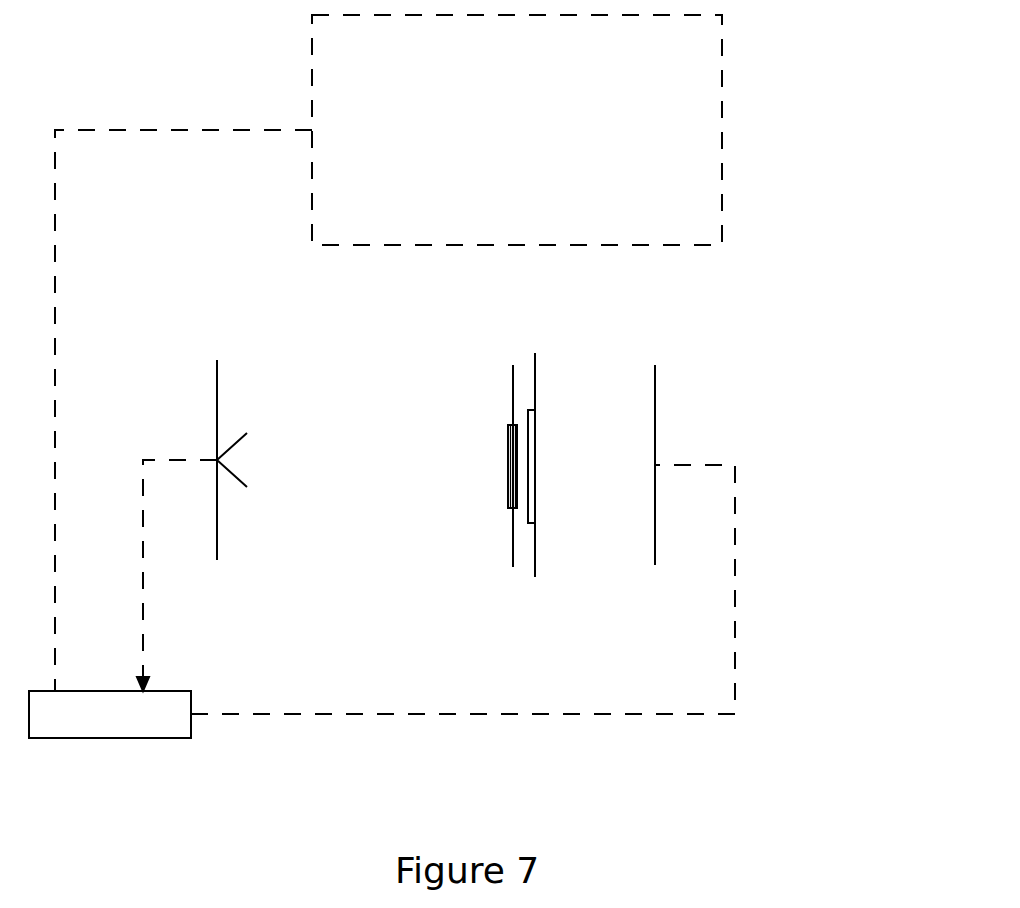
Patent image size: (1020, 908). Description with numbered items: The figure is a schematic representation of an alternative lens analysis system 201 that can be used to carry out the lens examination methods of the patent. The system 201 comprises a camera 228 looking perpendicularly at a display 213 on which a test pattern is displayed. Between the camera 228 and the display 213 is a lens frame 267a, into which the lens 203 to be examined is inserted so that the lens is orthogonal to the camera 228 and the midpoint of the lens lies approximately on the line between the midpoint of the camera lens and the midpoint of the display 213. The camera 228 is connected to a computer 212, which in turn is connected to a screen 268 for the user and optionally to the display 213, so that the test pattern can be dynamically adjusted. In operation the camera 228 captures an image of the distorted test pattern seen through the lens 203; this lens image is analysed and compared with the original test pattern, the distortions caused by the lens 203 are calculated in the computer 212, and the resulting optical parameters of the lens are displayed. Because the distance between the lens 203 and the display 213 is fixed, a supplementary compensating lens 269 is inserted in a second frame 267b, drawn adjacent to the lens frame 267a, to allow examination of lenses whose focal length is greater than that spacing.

The lens analysis system 201 is at (797, 258).
The screen 268 is at (541, 146).
The computer 212 is at (108, 727).
The camera 228 is at (217, 370).
The lens 203 is at (508, 452).
The lens frame 267a is at (512, 528).
The second frame 267b is at (535, 395).
The supplementary compensating lens 269 is at (536, 472).
The display 213 is at (656, 528).